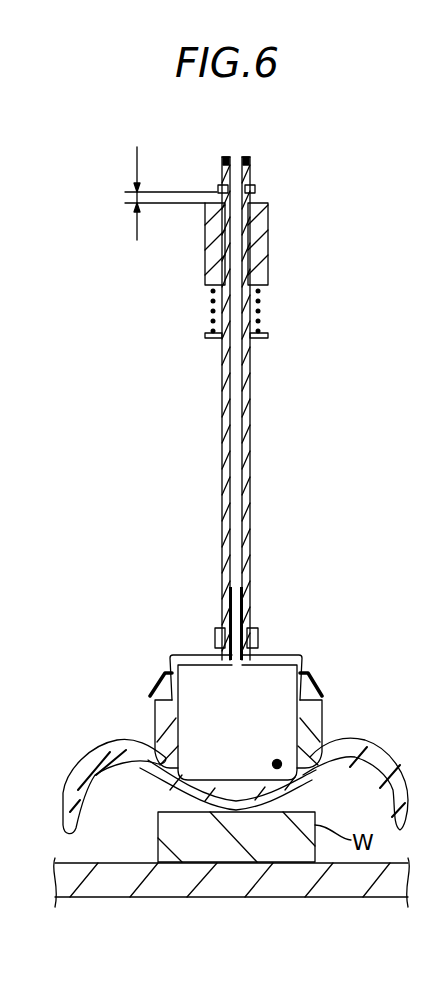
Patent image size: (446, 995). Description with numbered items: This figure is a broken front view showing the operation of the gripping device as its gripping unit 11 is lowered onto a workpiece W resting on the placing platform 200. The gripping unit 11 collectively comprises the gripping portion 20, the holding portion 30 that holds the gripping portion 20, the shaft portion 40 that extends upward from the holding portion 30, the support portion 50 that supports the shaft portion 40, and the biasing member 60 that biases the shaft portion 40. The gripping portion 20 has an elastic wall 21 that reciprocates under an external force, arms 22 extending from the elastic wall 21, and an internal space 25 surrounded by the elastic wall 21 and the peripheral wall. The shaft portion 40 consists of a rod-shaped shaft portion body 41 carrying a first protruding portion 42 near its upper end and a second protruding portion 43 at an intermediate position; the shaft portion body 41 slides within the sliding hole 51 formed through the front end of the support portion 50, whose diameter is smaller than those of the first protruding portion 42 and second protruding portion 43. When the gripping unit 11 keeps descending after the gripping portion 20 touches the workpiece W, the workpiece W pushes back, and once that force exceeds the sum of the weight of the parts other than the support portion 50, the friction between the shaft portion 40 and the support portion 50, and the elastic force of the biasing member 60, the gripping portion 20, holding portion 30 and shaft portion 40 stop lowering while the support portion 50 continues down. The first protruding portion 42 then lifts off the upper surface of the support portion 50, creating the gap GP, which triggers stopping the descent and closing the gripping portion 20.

The gripping unit 11 is at (153, 132).
The gripping portion 20 is at (114, 786).
The elastic wall 21 is at (233, 780).
The arms 22 is at (73, 753).
The internal space 25 is at (281, 766).
The holding portion 30 is at (283, 657).
The shaft portion 40 is at (236, 408).
The shaft portion body 41 is at (250, 410).
The first protruding portion 42 is at (255, 189).
The second protruding portion 43 is at (268, 337).
The support portion 50 is at (268, 248).
The sliding hole 51 is at (222, 240).
The biasing member 60 is at (262, 310).
The placing platform 200 is at (108, 897).